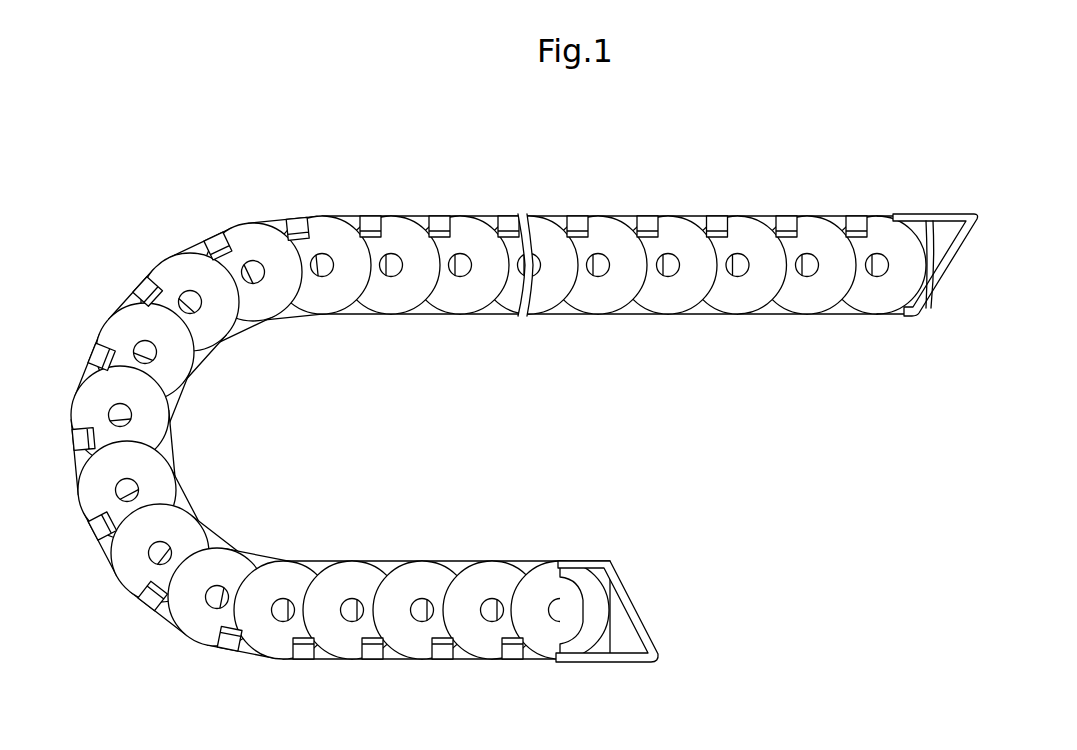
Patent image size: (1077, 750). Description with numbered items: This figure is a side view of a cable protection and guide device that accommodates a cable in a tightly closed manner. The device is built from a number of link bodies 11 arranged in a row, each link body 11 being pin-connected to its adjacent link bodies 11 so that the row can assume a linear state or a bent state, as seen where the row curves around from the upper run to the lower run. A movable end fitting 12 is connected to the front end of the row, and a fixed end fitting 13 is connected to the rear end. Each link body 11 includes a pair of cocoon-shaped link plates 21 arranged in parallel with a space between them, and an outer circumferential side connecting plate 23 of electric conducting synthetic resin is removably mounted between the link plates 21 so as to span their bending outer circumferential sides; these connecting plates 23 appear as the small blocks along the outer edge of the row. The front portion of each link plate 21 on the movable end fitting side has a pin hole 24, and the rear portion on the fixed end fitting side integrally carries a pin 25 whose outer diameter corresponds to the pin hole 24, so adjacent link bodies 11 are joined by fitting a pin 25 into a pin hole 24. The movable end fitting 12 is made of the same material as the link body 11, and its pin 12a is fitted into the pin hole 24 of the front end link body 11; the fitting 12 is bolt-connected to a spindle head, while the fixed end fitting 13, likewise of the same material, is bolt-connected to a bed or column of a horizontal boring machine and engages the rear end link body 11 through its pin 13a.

The link body 11 is at (498, 468).
The movable end fitting 12 is at (960, 212).
The pin 12a is at (880, 272).
The fixed end fitting 13 is at (590, 561).
The connecting pin of end bracket 13a is at (556, 604).
The link plate 21 is at (575, 307).
The outer circumferential side connecting plate 23 is at (578, 217).
The pin hole 24 is at (668, 255).
The pin 25 is at (600, 274).